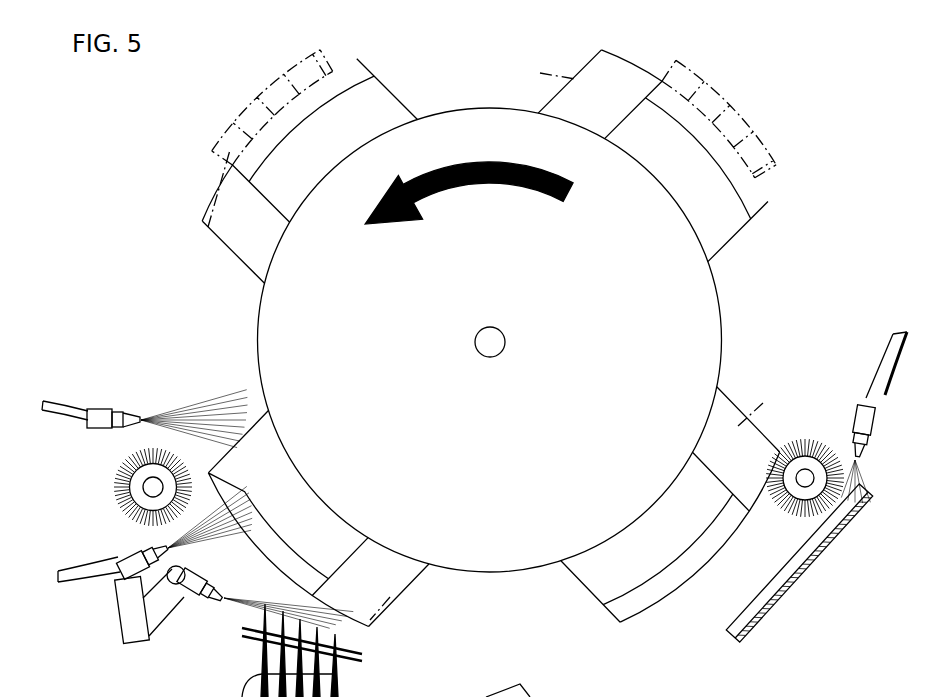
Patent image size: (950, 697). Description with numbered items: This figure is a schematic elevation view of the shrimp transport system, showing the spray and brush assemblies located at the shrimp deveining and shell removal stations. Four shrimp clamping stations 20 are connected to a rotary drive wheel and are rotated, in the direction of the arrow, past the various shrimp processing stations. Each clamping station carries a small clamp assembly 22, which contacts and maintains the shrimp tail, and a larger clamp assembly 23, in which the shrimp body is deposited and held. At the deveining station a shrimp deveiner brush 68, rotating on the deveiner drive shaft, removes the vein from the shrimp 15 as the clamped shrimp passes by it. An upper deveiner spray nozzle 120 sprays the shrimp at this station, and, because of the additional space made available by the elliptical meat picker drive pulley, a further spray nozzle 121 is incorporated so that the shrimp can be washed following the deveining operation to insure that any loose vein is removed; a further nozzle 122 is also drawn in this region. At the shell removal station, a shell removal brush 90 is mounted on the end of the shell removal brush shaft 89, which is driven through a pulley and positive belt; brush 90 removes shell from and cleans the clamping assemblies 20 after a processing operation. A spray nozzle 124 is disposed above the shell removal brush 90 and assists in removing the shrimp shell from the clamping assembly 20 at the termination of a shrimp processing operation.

The shrimp 15 is at (260, 97).
The shrimp clamping station 20 is at (370, 54).
The small clamp assembly 22 is at (555, 88).
The larger clamp assembly 23 is at (312, 153).
The shrimp deveiner brush 68 is at (114, 483).
The shell removal brush shaft 89 is at (800, 490).
The shell removal brush 90 is at (806, 441).
The upper deveiner spray nozzle 120 is at (97, 409).
The spray nozzle 121 is at (115, 553).
The spray nozzle 122 is at (186, 600).
The spray nozzle 124 is at (872, 413).